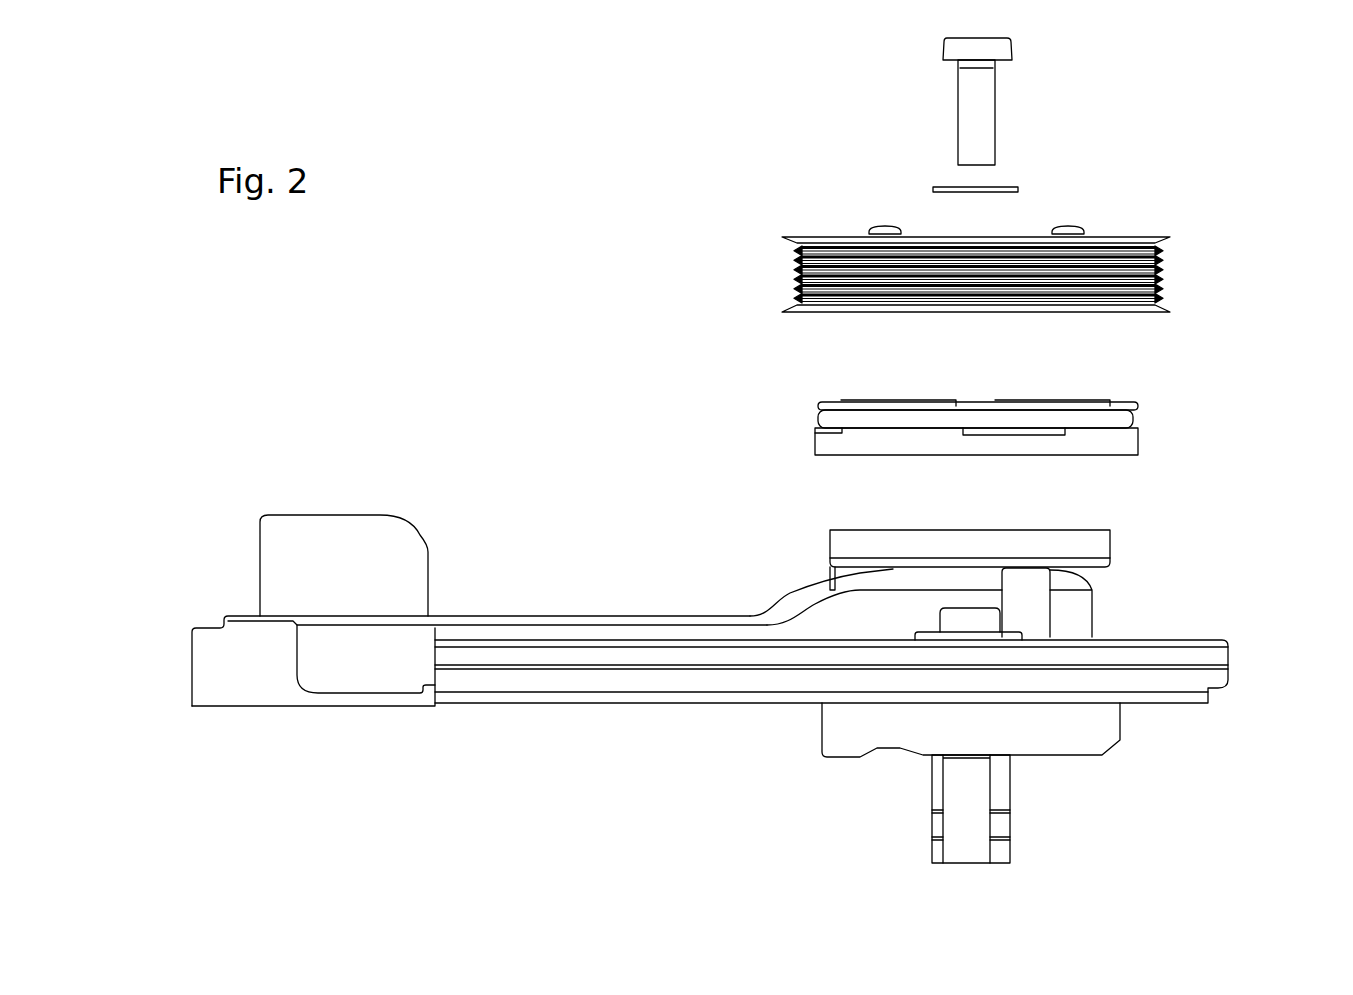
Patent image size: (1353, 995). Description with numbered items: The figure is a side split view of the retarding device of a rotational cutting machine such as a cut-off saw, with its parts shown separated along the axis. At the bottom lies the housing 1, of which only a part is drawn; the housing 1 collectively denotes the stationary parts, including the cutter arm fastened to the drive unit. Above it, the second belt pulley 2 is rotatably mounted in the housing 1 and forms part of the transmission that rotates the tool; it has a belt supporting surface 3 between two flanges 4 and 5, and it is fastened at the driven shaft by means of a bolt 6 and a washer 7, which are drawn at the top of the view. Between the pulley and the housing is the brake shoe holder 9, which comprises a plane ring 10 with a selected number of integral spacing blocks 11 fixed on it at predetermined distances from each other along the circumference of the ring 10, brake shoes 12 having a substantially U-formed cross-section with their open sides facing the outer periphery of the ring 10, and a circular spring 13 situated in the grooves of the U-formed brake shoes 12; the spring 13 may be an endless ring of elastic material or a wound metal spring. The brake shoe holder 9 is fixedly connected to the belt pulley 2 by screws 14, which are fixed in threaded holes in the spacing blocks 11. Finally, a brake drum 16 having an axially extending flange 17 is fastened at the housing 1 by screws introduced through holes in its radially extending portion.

The housing 1 is at (1218, 657).
The second belt pulley 2 is at (1020, 244).
The belt supporting surface 3 is at (1163, 268).
The flange 4 is at (782, 240).
The flange 5 is at (782, 308).
The bolt 6 is at (1005, 44).
The washer 7 is at (1013, 190).
The brake shoe holder 9 is at (960, 429).
The plane ring 10 is at (1133, 445).
The spacing blocks 11 is at (1085, 400).
The brake shoes 12 is at (1060, 432).
The circular spring 13 is at (1130, 418).
The screws 14 is at (876, 226).
The brake drum 16 is at (1069, 583).
The axially extending flange 17 is at (1112, 548).